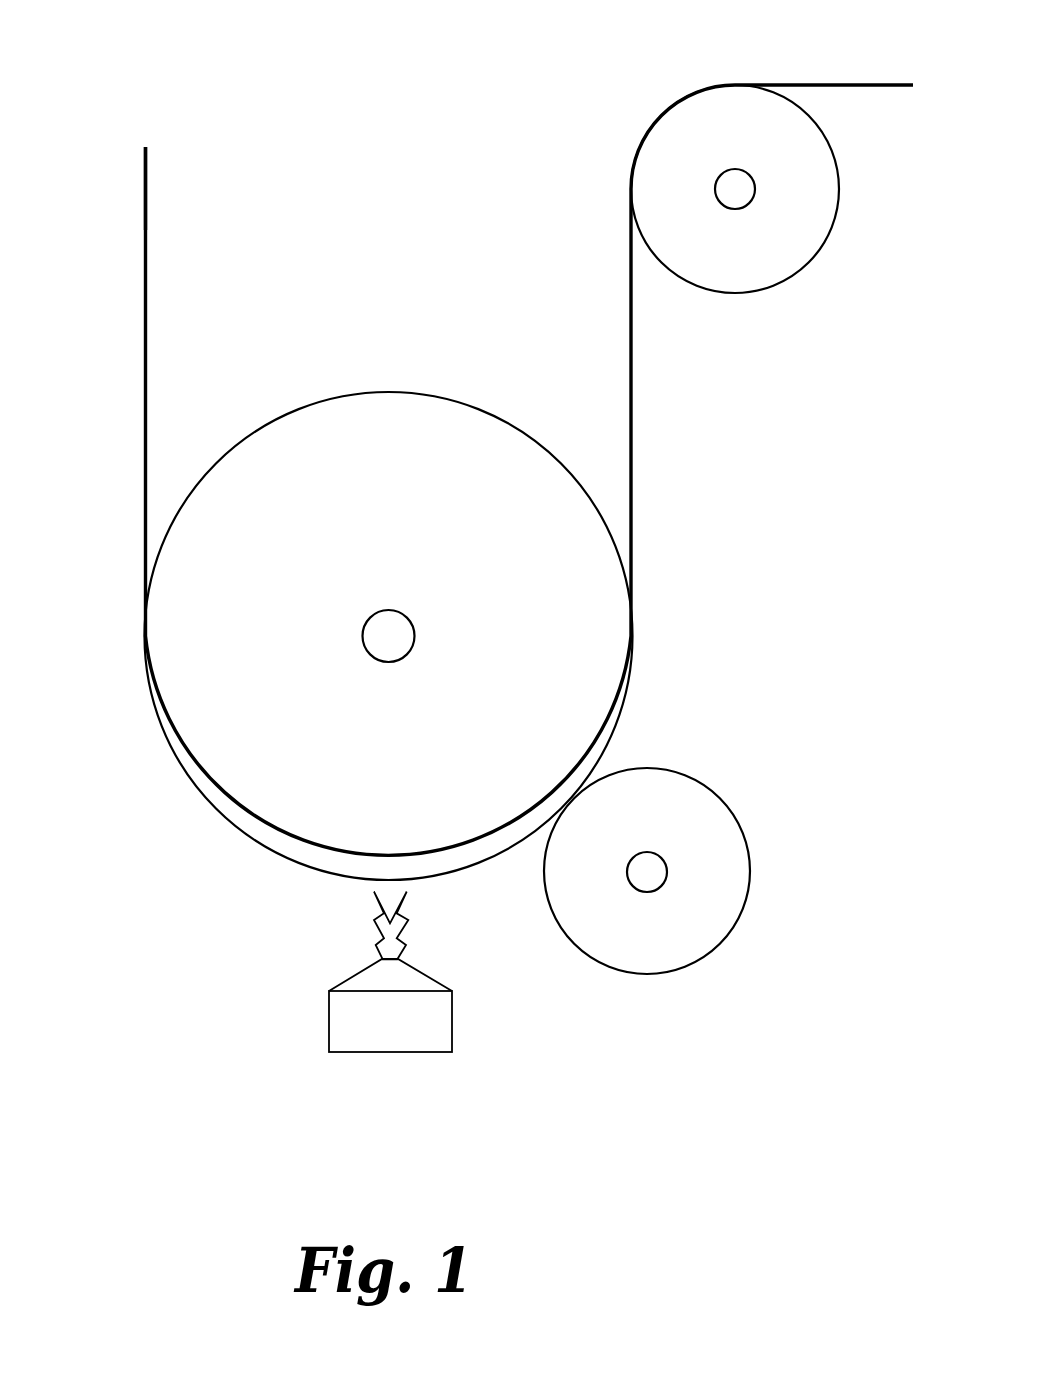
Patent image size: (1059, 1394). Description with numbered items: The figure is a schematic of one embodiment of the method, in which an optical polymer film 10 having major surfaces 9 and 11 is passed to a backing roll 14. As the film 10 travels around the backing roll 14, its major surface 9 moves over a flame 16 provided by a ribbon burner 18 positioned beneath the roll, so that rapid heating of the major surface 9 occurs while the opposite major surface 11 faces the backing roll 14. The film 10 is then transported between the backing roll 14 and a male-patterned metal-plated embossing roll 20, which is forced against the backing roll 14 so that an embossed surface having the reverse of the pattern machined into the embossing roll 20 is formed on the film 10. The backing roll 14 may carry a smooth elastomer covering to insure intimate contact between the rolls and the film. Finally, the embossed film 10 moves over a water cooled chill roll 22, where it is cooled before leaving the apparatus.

The major surface 9 is at (144, 255).
The optical polymer film 10 is at (142, 185).
The major surface 11 is at (150, 224).
The backing roll 14 is at (412, 408).
The flame 16 is at (377, 932).
The ribbon burner 18 is at (342, 1023).
The embossing roll 20 is at (715, 840).
The chill roll 22 is at (737, 107).